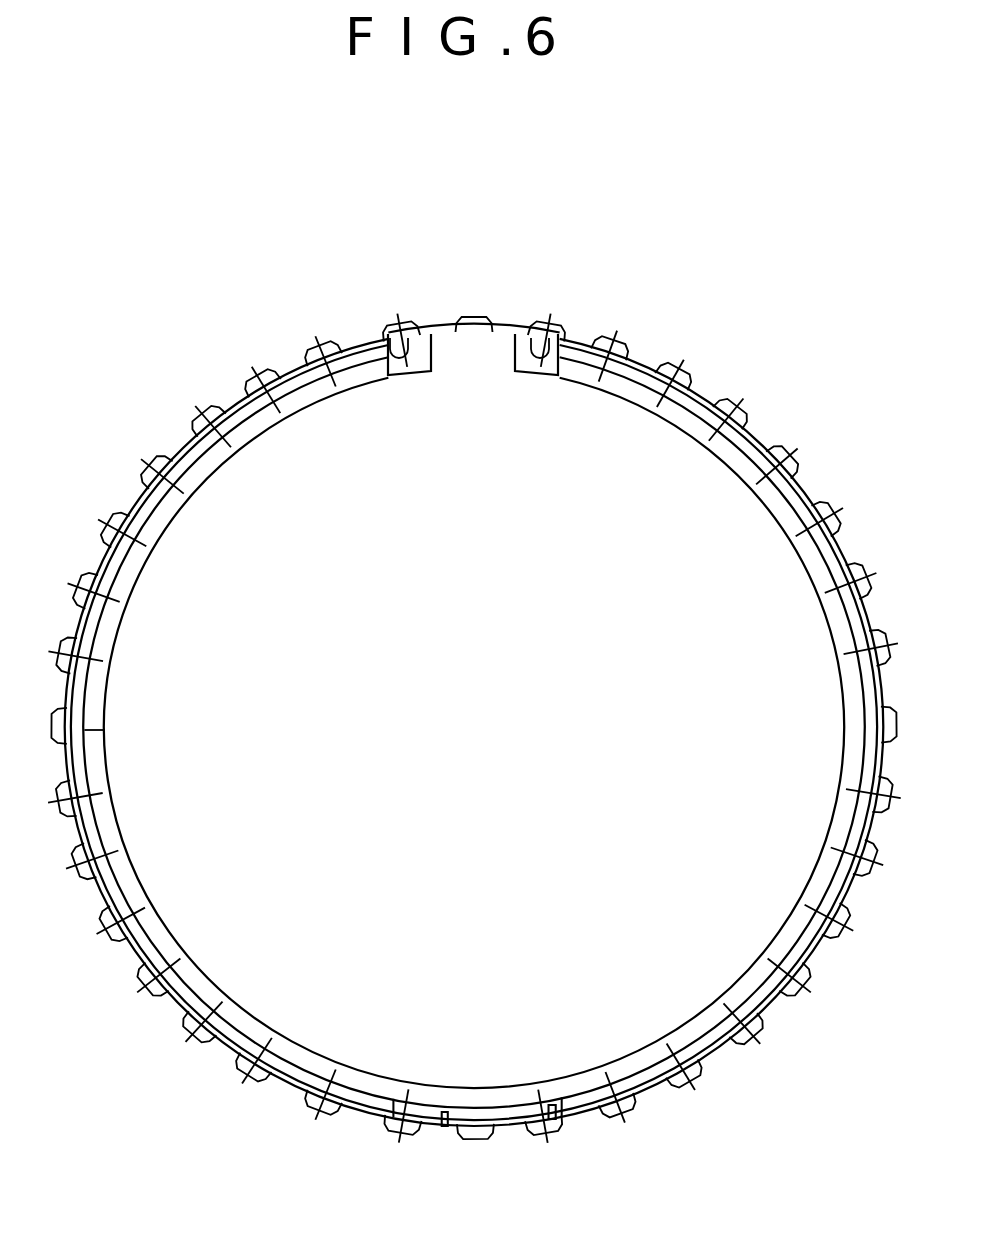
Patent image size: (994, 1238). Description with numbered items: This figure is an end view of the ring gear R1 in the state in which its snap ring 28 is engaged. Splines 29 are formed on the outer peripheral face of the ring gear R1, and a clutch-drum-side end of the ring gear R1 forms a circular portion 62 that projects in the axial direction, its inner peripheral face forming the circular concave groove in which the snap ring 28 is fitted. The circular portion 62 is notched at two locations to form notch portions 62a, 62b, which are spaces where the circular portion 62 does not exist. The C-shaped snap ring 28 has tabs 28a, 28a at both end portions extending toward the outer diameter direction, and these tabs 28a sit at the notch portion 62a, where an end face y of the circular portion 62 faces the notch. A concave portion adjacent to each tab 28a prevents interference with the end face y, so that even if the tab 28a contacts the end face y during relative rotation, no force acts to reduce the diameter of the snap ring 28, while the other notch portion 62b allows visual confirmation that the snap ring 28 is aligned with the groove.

The splines 29 is at (333, 338).
The snap ring 28 is at (314, 394).
The tab 28a is at (414, 347).
The end face y is at (393, 342).
The circular portion 62 is at (580, 348).
The notch portion 62a is at (463, 360).
The notch portion 62b is at (477, 1117).
The ring gear R1 is at (476, 288).